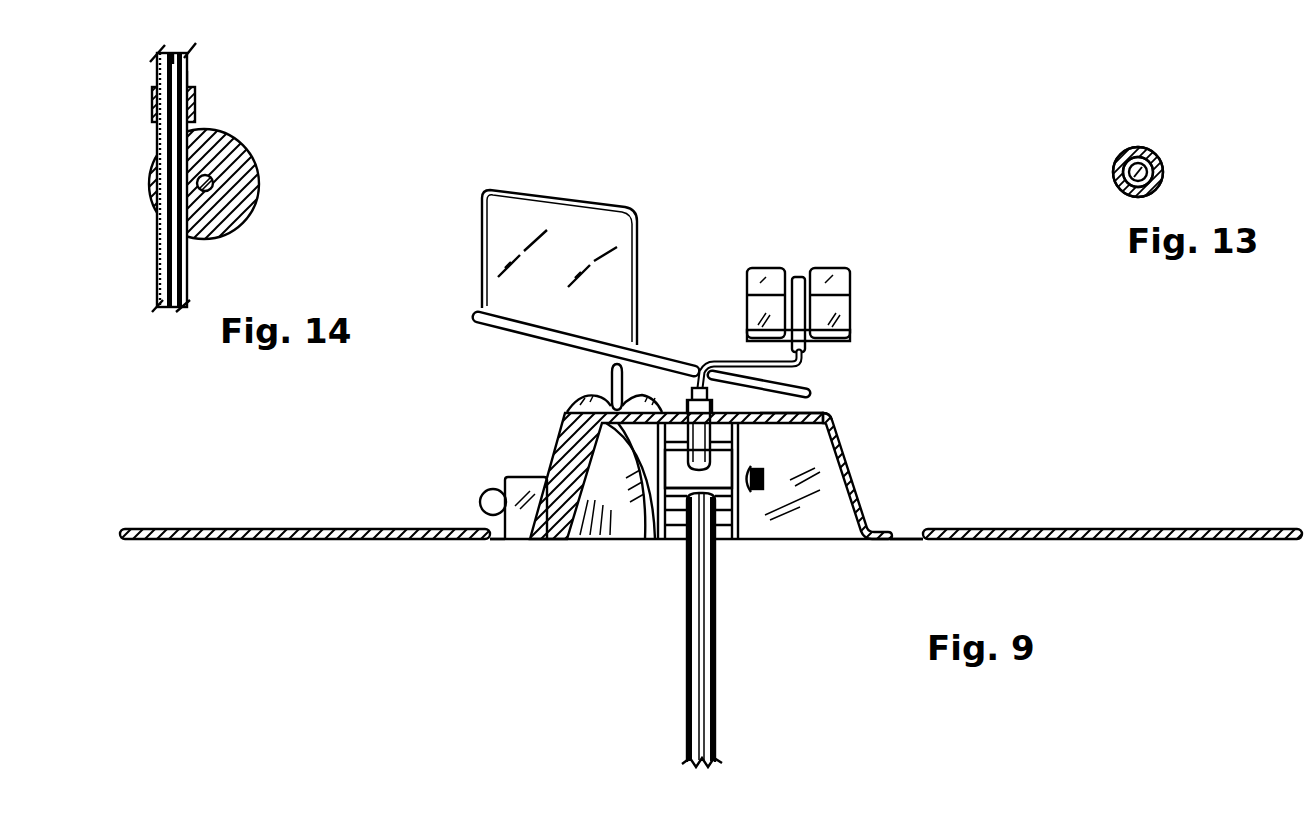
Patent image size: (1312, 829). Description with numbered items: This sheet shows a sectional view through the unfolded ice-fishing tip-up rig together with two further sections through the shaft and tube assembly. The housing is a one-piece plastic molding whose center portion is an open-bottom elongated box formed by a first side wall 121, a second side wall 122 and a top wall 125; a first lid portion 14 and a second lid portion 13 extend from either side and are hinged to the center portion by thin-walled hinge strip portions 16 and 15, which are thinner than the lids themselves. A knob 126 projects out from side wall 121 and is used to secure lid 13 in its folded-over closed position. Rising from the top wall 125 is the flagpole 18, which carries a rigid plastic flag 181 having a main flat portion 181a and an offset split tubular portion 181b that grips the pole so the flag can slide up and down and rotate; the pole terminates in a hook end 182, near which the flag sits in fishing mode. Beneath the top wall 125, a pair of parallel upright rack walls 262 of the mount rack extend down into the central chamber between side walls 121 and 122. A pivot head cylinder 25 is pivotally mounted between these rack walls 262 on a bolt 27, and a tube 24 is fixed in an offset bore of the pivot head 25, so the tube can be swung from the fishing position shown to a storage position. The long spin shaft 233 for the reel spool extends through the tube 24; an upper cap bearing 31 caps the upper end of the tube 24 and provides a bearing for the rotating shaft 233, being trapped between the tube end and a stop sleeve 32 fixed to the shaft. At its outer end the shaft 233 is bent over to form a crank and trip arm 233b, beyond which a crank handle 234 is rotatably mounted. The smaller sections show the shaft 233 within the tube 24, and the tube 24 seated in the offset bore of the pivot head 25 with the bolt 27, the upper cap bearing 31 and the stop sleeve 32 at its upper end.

In FIG. 9, the second lid portion 13 is at (1113, 528).
In FIG. 9, the first lid portion 14 is at (282, 528).
In FIG. 9, the hinge strip portion 15 is at (908, 540).
In FIG. 9, the hinge strip portion 16 is at (498, 542).
In FIG. 9, the flagpole 18 is at (807, 385).
In FIG. 14, the tube 24 is at (187, 270).
In FIG. 13, the tube 24 is at (1158, 162).
In FIG. 9, the tube 24 is at (687, 740).
In FIG. 14, the pivot head cylinder 25 is at (243, 145).
In FIG. 9, the pivot head cylinder 25 is at (718, 540).
In FIG. 14, the bolt 27 is at (214, 180).
In FIG. 9, the bolt 27 is at (765, 480).
In FIG. 14, the upper cap bearing 31 is at (152, 107).
In FIG. 9, the upper cap bearing 31 is at (687, 406).
In FIG. 14, the stop sleeve 32 is at (165, 78).
In FIG. 9, the stop sleeve 32 is at (713, 394).
In FIG. 9, the first side wall 121 is at (560, 443).
In FIG. 9, the second side wall 122 is at (857, 468).
In FIG. 9, the top wall 125 is at (827, 410).
In FIG. 9, the knob 126 is at (493, 490).
In FIG. 9, the flag 181 is at (482, 253).
In FIG. 9, the main flat portion 181a is at (577, 228).
In FIG. 9, the split tubular portion 181b is at (608, 380).
In FIG. 9, the hook end 182 is at (580, 393).
In FIG. 14, the spin shaft 233 is at (185, 65).
In FIG. 13, the spin shaft 233 is at (1137, 150).
In FIG. 9, the crank and trip arm 233b is at (803, 364).
In FIG. 9, the crank handle 234 is at (847, 272).
In FIG. 9, the rack walls 262 is at (637, 540).